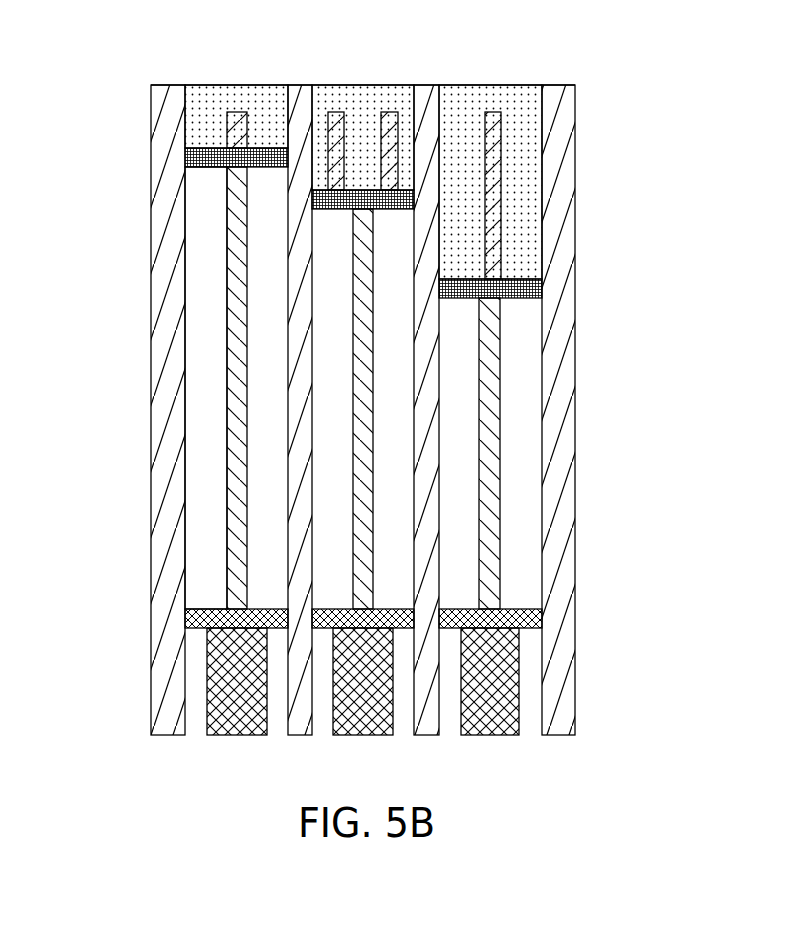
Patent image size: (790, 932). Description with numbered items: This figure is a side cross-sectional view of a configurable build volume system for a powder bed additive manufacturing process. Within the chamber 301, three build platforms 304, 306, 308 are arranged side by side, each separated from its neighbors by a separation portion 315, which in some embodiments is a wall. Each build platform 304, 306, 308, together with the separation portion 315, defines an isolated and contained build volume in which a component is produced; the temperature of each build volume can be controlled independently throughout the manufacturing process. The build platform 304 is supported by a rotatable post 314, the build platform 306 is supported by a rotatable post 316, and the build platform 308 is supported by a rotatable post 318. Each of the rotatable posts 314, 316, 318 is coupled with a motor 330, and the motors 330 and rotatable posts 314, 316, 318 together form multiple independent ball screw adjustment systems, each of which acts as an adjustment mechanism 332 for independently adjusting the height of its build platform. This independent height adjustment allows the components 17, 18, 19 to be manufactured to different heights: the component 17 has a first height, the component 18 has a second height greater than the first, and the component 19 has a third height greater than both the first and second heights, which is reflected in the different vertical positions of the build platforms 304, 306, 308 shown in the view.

The chamber 301 is at (522, 130).
The build platform 304 is at (203, 136).
The build platform 306 is at (368, 178).
The build platform 308 is at (453, 262).
The component 17 is at (238, 118).
The component 18 is at (392, 125).
The component 19 is at (493, 212).
The rotatable post 314 is at (235, 360).
The rotatable post 316 is at (368, 487).
The rotatable post 318 is at (487, 365).
The separation portion 315 is at (553, 492).
The motor 330 is at (232, 713).
The adjustment mechanism 332 is at (200, 290).